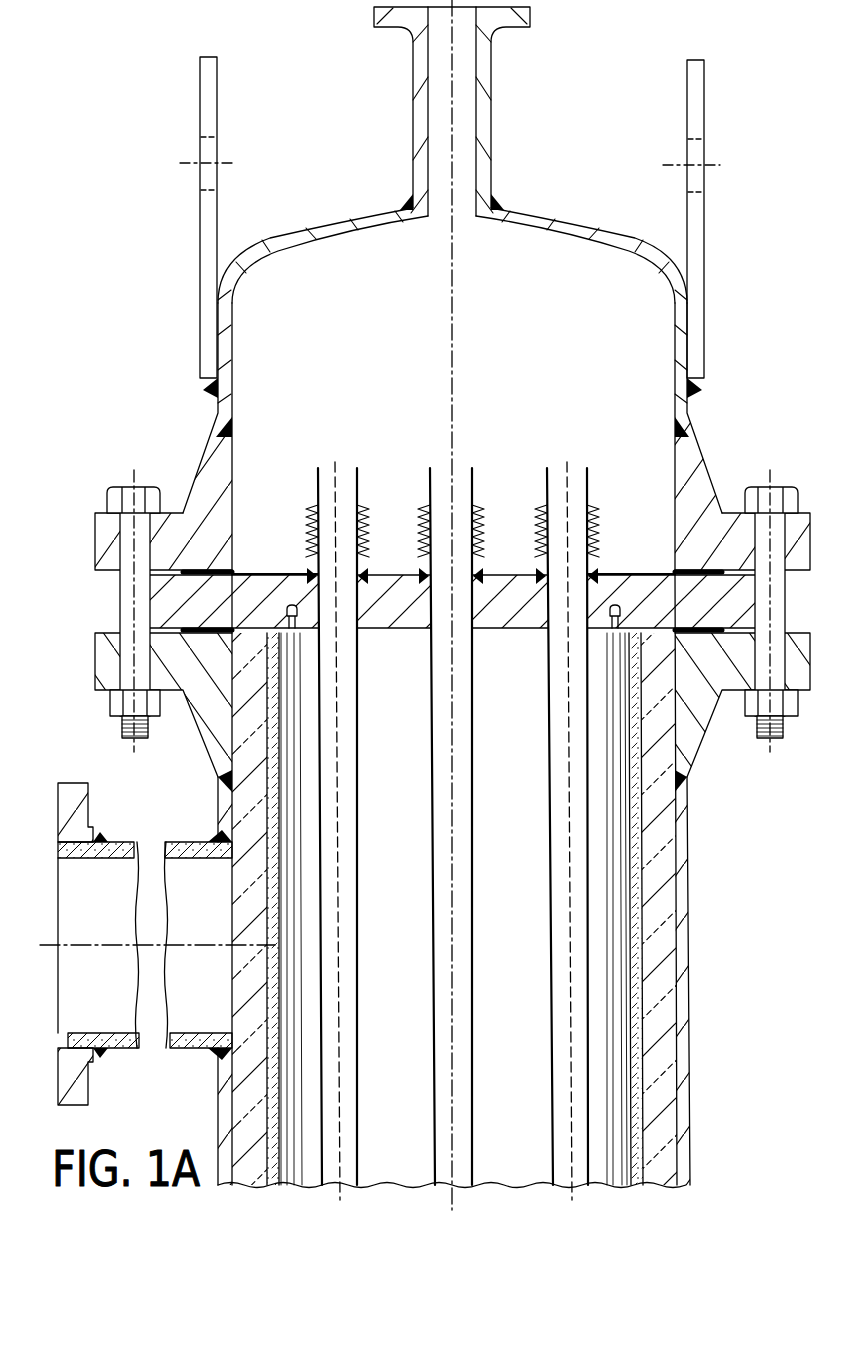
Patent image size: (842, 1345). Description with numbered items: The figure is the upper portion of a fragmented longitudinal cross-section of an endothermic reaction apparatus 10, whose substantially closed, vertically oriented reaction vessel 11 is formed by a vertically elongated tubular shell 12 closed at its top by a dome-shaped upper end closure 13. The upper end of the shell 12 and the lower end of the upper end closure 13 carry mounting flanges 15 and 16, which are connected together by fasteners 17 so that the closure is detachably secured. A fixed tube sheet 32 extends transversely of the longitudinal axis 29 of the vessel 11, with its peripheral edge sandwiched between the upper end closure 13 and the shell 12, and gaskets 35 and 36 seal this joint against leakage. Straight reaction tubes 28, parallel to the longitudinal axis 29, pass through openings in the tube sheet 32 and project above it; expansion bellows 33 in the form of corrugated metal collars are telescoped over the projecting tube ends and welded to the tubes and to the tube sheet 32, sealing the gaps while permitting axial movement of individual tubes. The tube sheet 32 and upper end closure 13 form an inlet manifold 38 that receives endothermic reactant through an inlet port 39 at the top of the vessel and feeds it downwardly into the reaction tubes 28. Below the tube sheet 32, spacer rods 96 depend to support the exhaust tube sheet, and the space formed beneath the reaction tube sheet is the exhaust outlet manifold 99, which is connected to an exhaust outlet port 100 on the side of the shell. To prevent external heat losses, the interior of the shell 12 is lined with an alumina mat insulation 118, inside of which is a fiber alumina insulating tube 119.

The endothermic reaction apparatus 10 is at (164, 309).
The reaction vessel 11 is at (688, 906).
The tubular shell 12 is at (690, 1054).
The upper end closure 13 is at (583, 229).
The mounting flange 15 is at (94, 655).
The mounting flange 16 is at (94, 553).
The fasteners 17 is at (112, 487).
The reaction tubes 28 is at (548, 884).
The longitudinal axis 29 is at (452, 380).
The fixed tube sheet 32 is at (632, 577).
The expansion bellows 33 is at (306, 530).
The gasket 35 is at (725, 517).
The gasket 36 is at (704, 675).
The inlet manifold 38 is at (644, 321).
The inlet port 39 is at (412, 125).
The spacer rods 96 is at (617, 985).
The exhaust outlet manifold 99 is at (520, 1172).
The exhaust outlet port 100 is at (126, 1052).
The alumina mat insulation 118 is at (660, 1135).
The fiber alumina insulating tube 119 is at (638, 852).